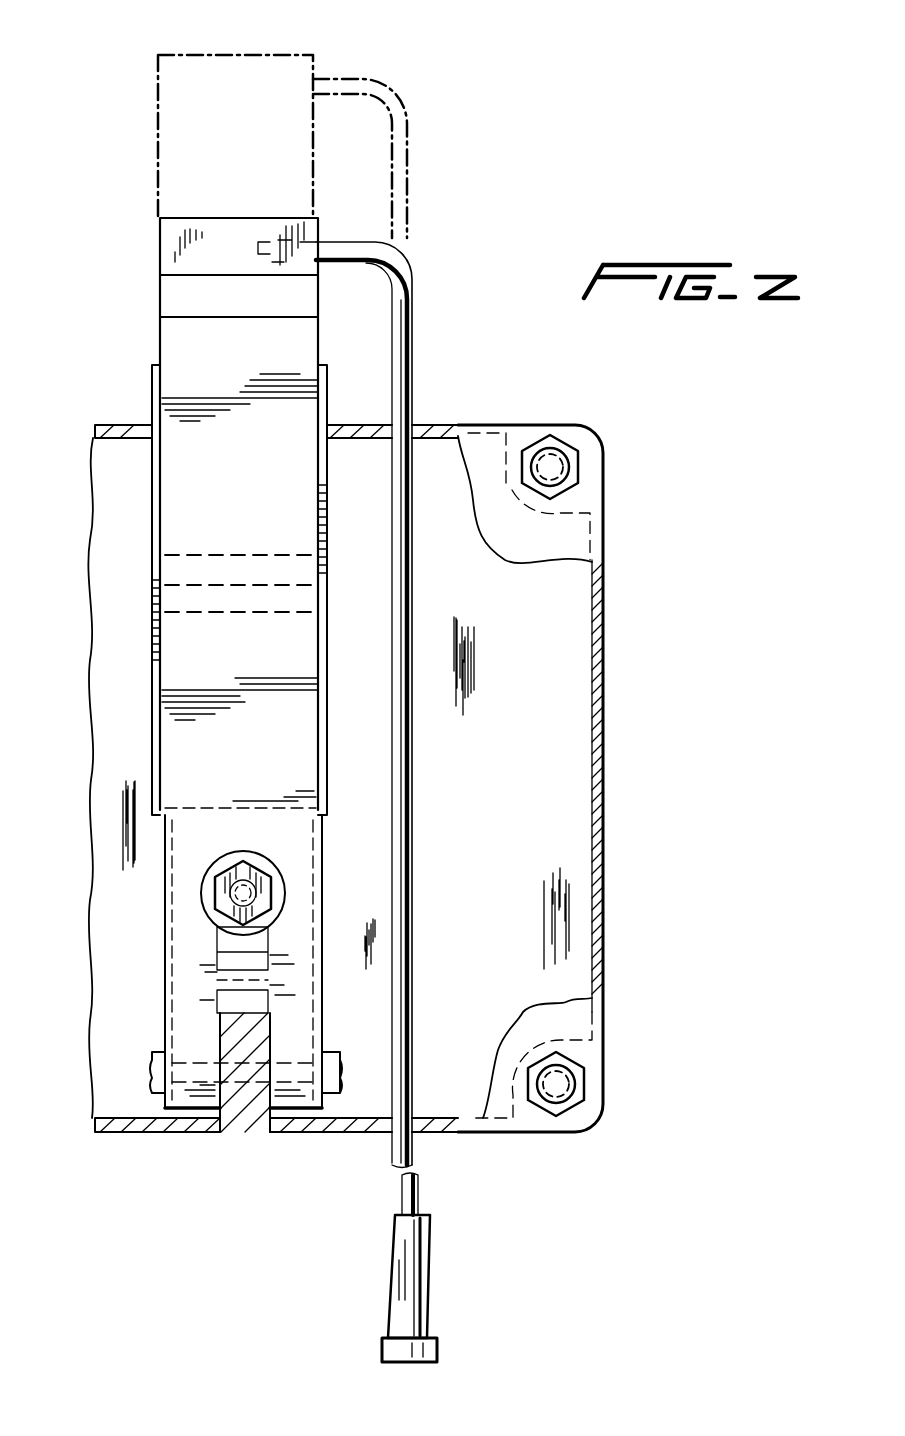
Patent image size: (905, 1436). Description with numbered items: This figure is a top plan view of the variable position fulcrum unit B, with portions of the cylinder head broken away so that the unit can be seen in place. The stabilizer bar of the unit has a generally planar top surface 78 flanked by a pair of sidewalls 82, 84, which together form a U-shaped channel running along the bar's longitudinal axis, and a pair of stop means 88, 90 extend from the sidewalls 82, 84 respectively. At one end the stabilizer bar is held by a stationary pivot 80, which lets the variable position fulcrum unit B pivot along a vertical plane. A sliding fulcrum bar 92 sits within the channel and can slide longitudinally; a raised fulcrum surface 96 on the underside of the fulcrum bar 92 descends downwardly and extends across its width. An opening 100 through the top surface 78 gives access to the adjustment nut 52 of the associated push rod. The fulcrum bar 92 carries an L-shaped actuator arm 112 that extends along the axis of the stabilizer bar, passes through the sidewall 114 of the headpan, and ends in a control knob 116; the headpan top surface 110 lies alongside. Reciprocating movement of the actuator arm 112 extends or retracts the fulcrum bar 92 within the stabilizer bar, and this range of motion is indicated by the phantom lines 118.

The adjustment nut 52 is at (265, 902).
The top surface 78 is at (239, 447).
The stationary pivot 80 is at (292, 1075).
The sidewall 82 is at (328, 542).
The sidewall 84 is at (157, 587).
The stop means 88 is at (318, 832).
The stop means 90 is at (170, 859).
The sliding fulcrum bar 92 is at (288, 301).
The raised fulcrum surface 96 is at (232, 556).
The opening 100 is at (207, 902).
The headpan top surface 110 is at (572, 541).
The L-shaped actuator arm 112 is at (413, 312).
The sidewall of the headpan 114 is at (427, 425).
The control knob 116 is at (412, 1278).
The phantom lines 118 is at (262, 55).
The variable position fulcrum unit B is at (148, 795).